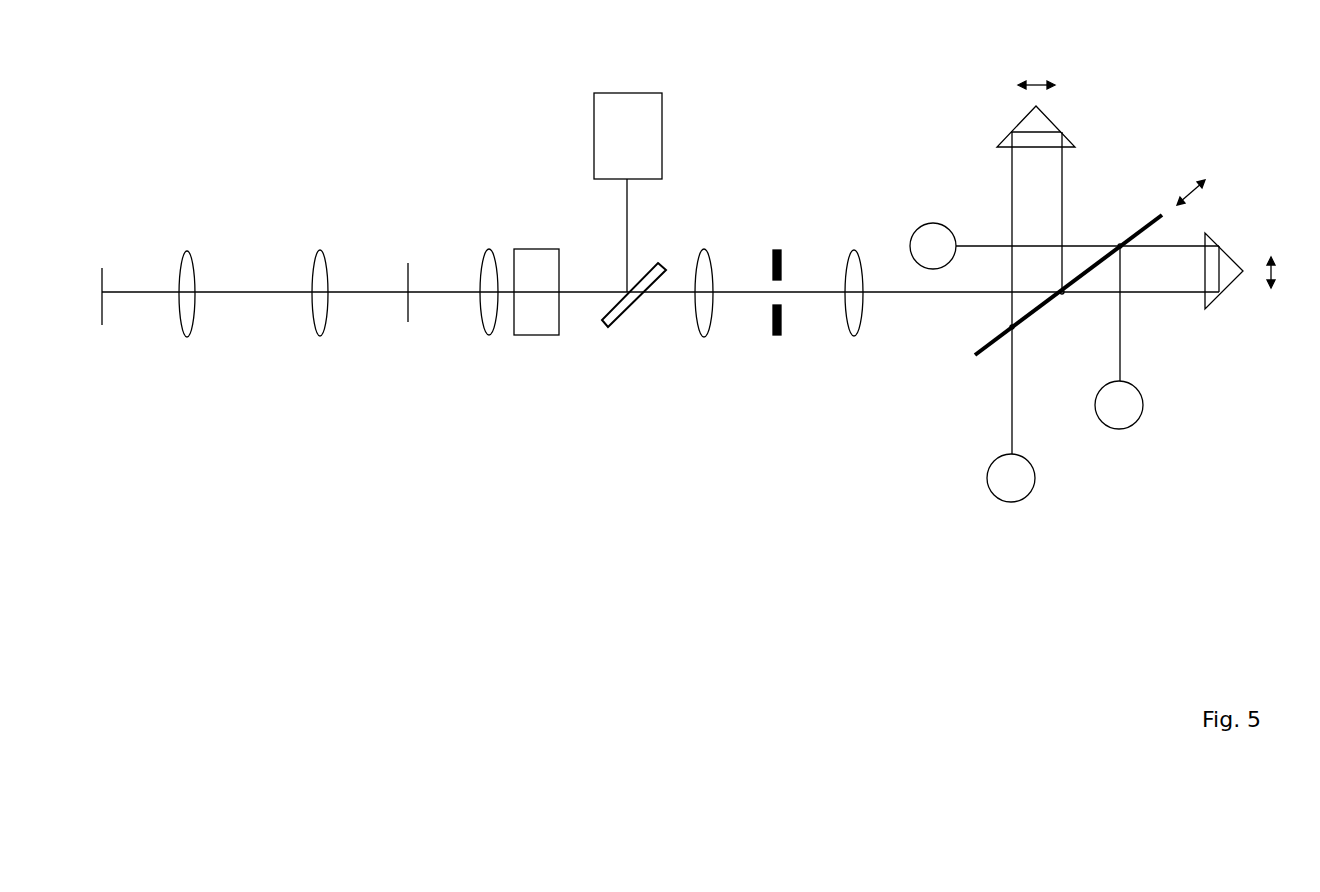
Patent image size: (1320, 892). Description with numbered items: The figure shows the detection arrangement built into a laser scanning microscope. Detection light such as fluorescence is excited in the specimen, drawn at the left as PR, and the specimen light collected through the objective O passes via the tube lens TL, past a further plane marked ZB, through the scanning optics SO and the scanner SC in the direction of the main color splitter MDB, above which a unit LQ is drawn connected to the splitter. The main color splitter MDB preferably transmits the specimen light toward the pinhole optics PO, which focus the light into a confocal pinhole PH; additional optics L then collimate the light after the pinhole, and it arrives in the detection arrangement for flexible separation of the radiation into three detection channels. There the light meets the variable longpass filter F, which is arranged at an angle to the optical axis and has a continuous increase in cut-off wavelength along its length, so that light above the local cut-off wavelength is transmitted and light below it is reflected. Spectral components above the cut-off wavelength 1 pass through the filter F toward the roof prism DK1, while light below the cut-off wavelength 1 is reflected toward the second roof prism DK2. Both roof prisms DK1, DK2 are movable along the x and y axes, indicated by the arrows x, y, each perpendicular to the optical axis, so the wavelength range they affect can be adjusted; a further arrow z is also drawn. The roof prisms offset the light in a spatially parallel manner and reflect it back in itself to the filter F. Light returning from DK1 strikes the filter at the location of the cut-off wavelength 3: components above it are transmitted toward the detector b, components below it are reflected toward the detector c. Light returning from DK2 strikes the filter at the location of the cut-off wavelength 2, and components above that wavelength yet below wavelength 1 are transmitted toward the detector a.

The sample / probe PR is at (104, 277).
The objective O is at (187, 283).
The tube lens TL is at (319, 283).
The intermediate image plane ZB is at (413, 274).
The scanning optics SO is at (489, 277).
The scanner SC is at (536, 277).
The light source LQ is at (657, 192).
The main color splitter MDB is at (634, 316).
The pinhole optics PO is at (704, 284).
The confocal pinhole PH is at (776, 282).
The additional optics L is at (854, 282).
The detector a is at (1011, 500).
The detector b is at (916, 246).
The detector c is at (1119, 428).
The roof prism DK1 is at (1236, 284).
The second roof prism DK2 is at (1062, 127).
The variable longpass filter F is at (1059, 301).
The cut-off wavelength 1 is at (1068, 308).
The cut-off wavelength 2 is at (1027, 339).
The cut-off wavelength 3 is at (1117, 233).
The x axis x is at (1285, 272).
The y axis y is at (1036, 71).
The z direction of movement z is at (1212, 185).